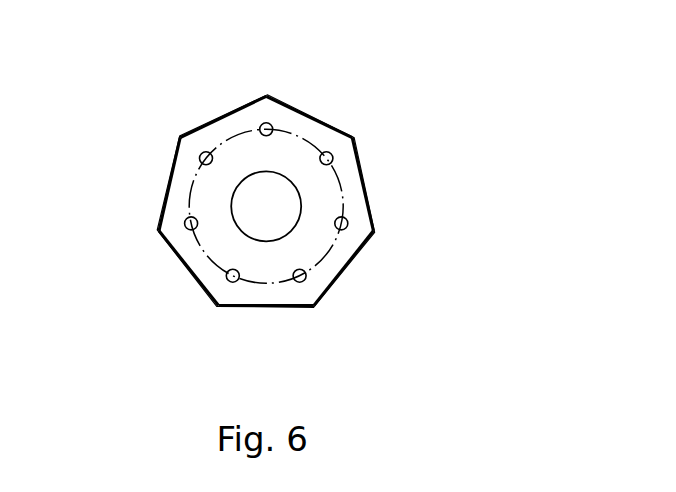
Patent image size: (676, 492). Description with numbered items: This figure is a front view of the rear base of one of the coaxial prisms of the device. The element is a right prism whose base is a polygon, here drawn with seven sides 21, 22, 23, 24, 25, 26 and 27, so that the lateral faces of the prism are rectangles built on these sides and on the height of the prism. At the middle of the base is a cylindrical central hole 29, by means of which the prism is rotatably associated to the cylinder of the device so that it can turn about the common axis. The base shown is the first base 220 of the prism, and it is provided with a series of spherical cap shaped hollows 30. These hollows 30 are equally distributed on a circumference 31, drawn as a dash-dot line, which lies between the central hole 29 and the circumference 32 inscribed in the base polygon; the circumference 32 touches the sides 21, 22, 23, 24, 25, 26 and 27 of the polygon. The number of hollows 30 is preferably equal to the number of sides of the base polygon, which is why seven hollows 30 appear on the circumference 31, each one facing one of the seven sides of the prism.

The side of base polygon 21 is at (232, 116).
The side of base polygon 22 is at (313, 120).
The side of base polygon 23 is at (362, 177).
The side of base polygon 24 is at (342, 273).
The side of base polygon 25 is at (259, 308).
The side of base polygon 26 is at (183, 263).
The side of base polygon 27 is at (172, 178).
The cylindrical central hole 29 is at (243, 235).
The spherical cap shaped hollows 30 is at (299, 279).
The circumference 31 is at (207, 285).
The inscribed circumference 32 is at (268, 107).
The first base 220 is at (353, 211).